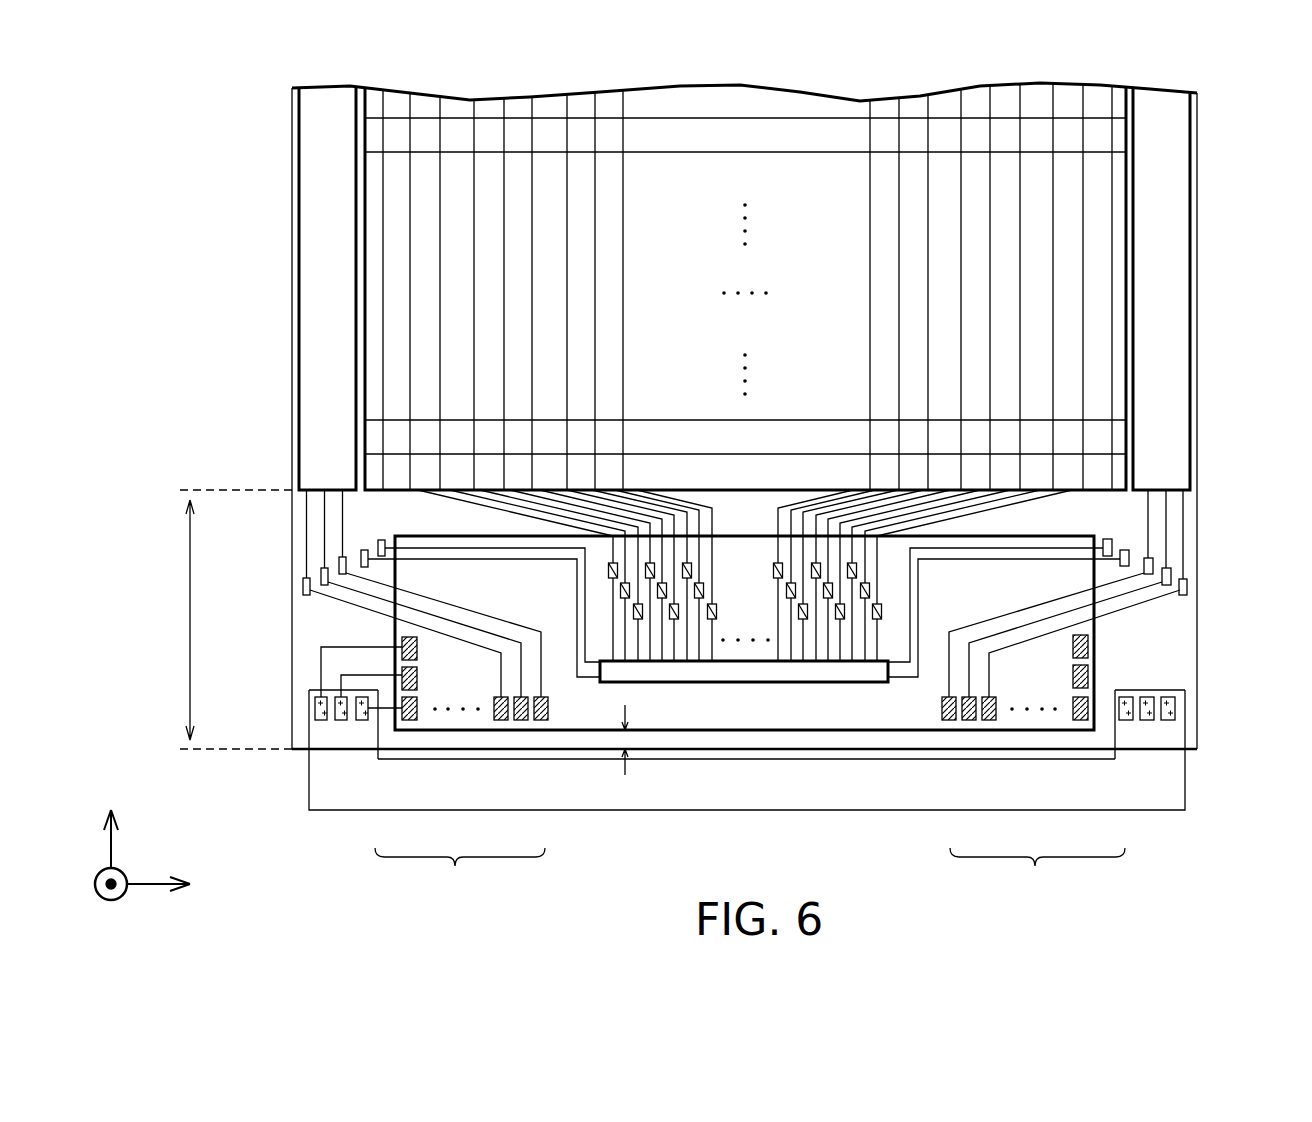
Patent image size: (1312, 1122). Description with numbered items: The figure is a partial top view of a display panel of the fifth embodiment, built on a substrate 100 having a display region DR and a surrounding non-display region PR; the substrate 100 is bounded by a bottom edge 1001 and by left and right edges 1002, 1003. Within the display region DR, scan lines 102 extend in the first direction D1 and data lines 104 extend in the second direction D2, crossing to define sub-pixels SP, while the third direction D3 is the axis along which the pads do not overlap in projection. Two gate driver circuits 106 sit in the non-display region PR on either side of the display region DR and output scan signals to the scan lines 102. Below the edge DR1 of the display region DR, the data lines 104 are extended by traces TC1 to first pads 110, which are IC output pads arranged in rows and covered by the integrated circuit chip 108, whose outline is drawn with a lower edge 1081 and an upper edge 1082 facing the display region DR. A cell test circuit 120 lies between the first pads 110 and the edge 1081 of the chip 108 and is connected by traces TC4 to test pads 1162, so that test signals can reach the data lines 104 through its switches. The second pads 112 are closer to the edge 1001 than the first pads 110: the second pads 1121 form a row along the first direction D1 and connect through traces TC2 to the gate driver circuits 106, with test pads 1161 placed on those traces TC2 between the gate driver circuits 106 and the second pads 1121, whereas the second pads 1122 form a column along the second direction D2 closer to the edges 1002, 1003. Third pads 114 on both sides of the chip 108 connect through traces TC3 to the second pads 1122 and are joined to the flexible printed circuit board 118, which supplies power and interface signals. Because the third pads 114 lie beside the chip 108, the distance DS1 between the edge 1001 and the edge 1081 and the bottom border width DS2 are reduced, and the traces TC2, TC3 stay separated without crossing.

The substrate 100 is at (292, 170).
The edge of the substrate 1002 is at (292, 360).
The edge of the substrate 1003 is at (1197, 362).
The edge of the substrate 1001 is at (800, 751).
The scan lines 102 is at (395, 118).
The data lines 104 is at (413, 107).
The gate driver circuit 106 is at (320, 280).
The integrated circuit chip 108 is at (665, 700).
The edge of the integrated circuit chip 1081 is at (855, 761).
The edge of flexible circuit board 1082 is at (1073, 533).
The first pads 110 is at (776, 570).
The second pads 112 is at (750, 872).
The second pads of the first portion 1121 is at (507, 722).
The second pads of the second portion 1122 is at (415, 722).
The third pads 114 is at (1168, 708).
The test pads 1161 is at (1188, 586).
The test pads 1162 is at (382, 540).
The flexible printed circuit board 118 is at (1175, 769).
The cell test circuit 120 is at (724, 683).
The sub-pixels SP is at (488, 135).
The display region DR is at (712, 100).
The edge of the display region DR1 is at (746, 498).
The non-display region PR is at (292, 228).
The traces TC1 is at (712, 522).
The traces TC2 is at (1166, 596).
The traces TC3 is at (1172, 677).
The traces TC4 is at (485, 536).
The distance DS1 is at (601, 738).
The width of the bottom border DS2 is at (236, 619).
The first direction D1 is at (179, 888).
The second direction D2 is at (112, 825).
The third direction D3 is at (112, 900).